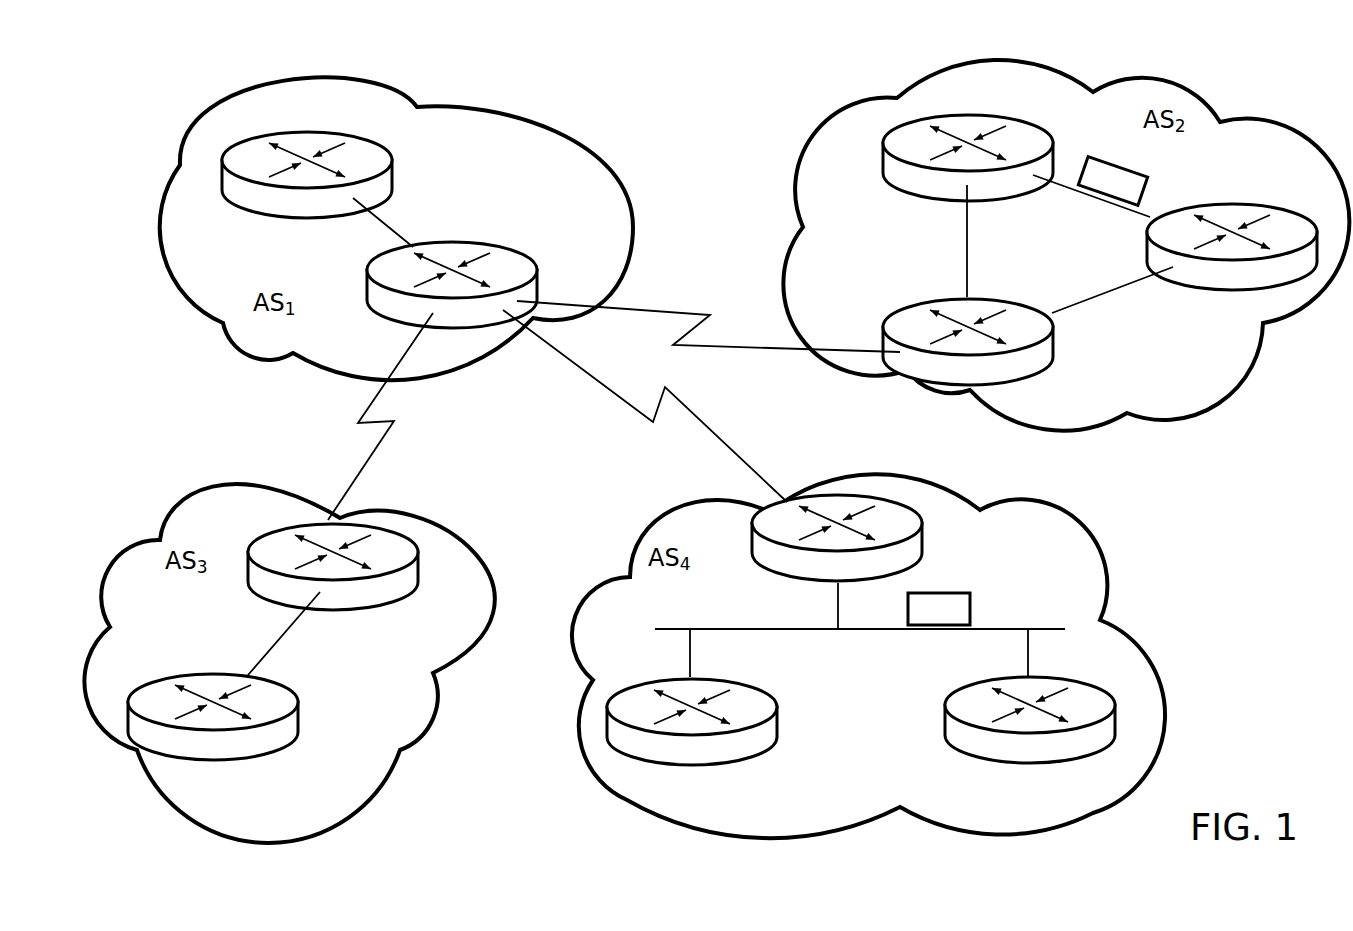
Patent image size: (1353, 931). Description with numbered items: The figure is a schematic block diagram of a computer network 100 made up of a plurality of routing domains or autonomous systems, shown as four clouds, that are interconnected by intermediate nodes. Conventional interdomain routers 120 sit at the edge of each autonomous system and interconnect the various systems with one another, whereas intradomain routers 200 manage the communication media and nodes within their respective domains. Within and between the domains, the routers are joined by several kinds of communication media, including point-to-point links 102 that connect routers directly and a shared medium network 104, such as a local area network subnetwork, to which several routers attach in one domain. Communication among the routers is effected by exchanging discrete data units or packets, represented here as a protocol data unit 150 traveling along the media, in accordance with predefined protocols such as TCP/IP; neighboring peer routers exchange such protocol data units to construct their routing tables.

The computer network 100 is at (146, 150).
The point-to-point link 102 is at (393, 223).
The shared medium network 104 is at (866, 631).
The interdomain router 120 is at (521, 256).
The protocol data unit (PDU) 150 is at (1133, 170).
The intradomain router 200 is at (305, 132).